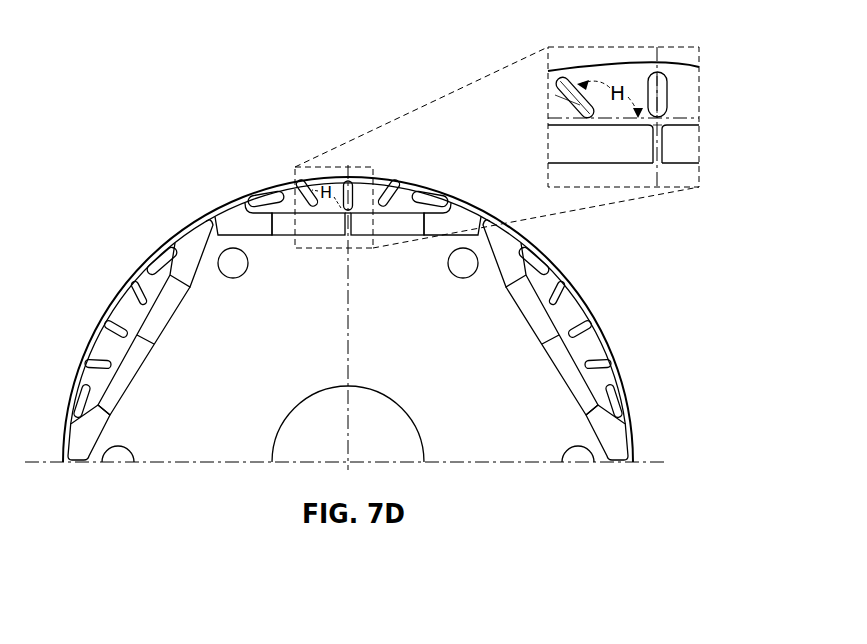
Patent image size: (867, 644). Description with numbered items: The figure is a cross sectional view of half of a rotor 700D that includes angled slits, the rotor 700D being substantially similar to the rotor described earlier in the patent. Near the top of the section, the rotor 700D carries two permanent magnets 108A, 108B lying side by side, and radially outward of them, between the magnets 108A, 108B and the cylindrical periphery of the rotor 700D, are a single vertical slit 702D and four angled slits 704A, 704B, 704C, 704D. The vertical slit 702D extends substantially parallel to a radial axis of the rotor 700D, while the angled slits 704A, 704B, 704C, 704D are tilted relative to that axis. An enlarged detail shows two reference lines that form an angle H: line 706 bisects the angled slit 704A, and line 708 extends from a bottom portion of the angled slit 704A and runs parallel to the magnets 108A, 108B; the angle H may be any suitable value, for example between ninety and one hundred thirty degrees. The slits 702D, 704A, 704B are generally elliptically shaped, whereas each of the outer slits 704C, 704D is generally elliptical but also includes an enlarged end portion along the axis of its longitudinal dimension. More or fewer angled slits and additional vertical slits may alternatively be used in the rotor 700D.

The rotor 700D is at (209, 45).
The angled slit 704A is at (298, 180).
The angled slit 704B is at (393, 183).
The angled slit 704C is at (258, 193).
The angled slit 704D is at (428, 190).
The vertical slit 702D is at (348, 178).
The permanent magnet 108A is at (312, 230).
The permanent magnet 108B is at (392, 230).
The line 706 is at (575, 102).
The line 708 is at (560, 115).